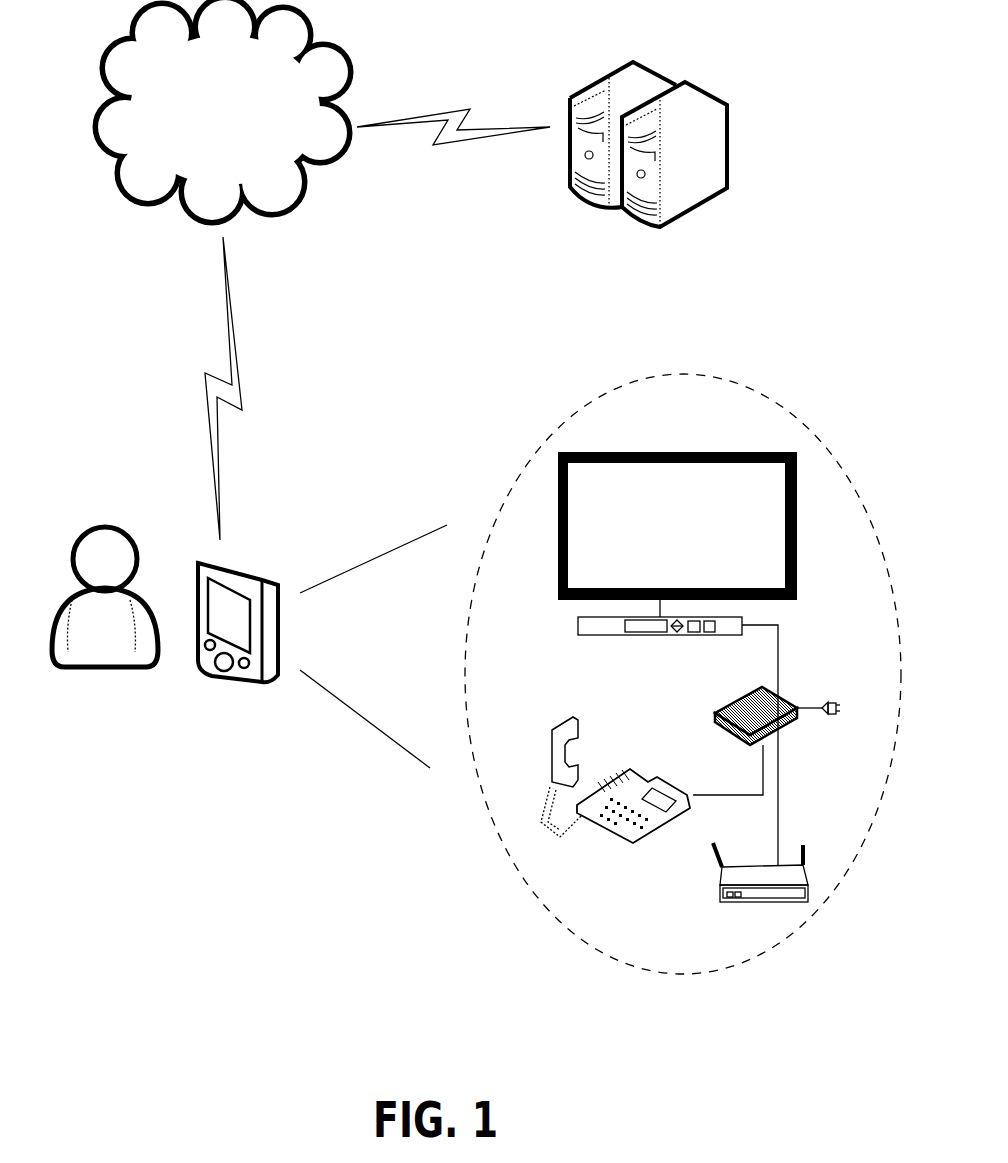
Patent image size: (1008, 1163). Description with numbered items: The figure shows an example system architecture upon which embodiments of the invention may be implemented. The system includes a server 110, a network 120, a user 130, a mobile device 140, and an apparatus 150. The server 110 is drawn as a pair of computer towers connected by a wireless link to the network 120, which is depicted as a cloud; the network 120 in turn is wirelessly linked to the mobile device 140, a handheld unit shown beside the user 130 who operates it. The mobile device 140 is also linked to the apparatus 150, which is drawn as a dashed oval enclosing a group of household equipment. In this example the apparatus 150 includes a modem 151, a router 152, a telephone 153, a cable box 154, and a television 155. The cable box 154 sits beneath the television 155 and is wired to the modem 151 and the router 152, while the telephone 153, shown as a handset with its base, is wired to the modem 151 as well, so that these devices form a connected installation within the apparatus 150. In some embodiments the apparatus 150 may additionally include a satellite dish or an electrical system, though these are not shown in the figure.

The server 110 is at (698, 217).
The network 120 is at (250, 124).
The user 130 is at (108, 670).
The mobile device 140 is at (247, 697).
The apparatus 150 is at (683, 665).
The modem 151 is at (787, 695).
The router 152 is at (710, 868).
The telephone 153 is at (548, 735).
The cable box 154 is at (618, 640).
The television 155 is at (555, 535).